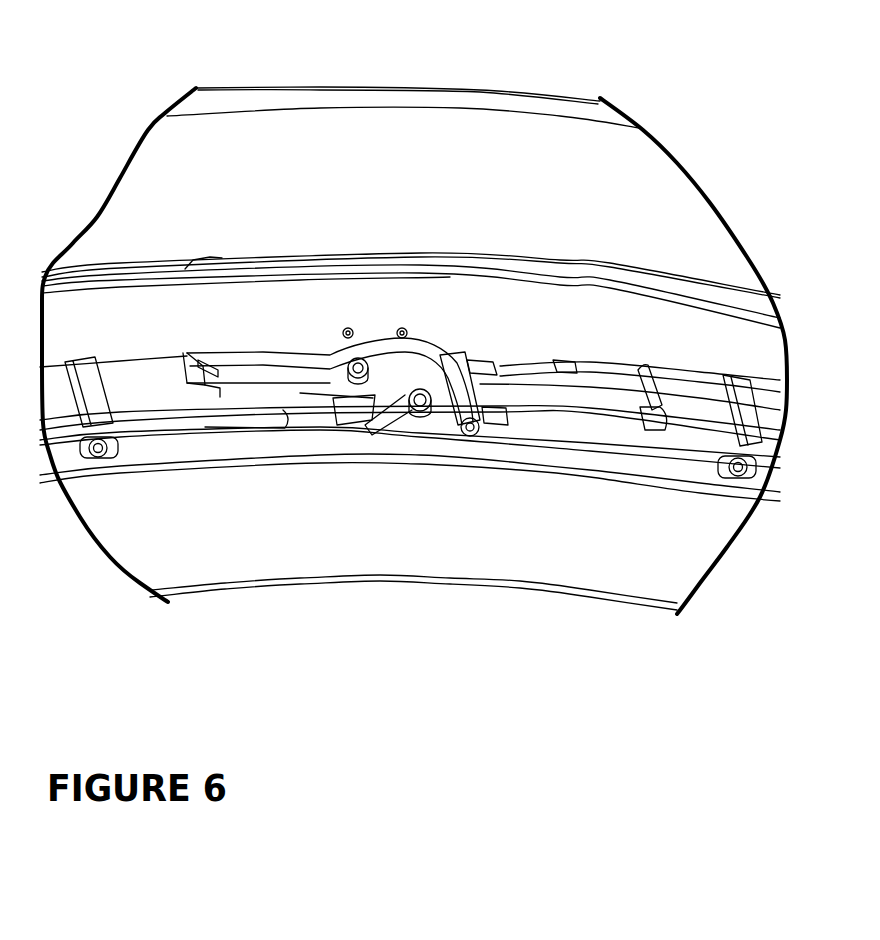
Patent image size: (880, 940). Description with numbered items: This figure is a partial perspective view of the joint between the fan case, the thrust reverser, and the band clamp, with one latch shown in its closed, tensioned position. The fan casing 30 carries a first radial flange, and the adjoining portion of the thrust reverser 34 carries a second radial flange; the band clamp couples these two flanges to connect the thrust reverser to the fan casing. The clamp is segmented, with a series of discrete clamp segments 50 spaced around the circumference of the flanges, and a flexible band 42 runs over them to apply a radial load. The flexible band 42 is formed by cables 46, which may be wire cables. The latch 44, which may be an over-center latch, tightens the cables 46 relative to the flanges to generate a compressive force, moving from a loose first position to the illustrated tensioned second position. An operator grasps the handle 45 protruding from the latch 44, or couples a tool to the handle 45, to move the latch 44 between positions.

The fan casing 30 is at (437, 543).
The thrust reverser 34 is at (277, 142).
The flexible band 42 is at (523, 432).
The latch 44 is at (285, 355).
The handle 45 is at (238, 372).
The cables 46 is at (520, 372).
The discrete clamp segments 50 is at (140, 400).